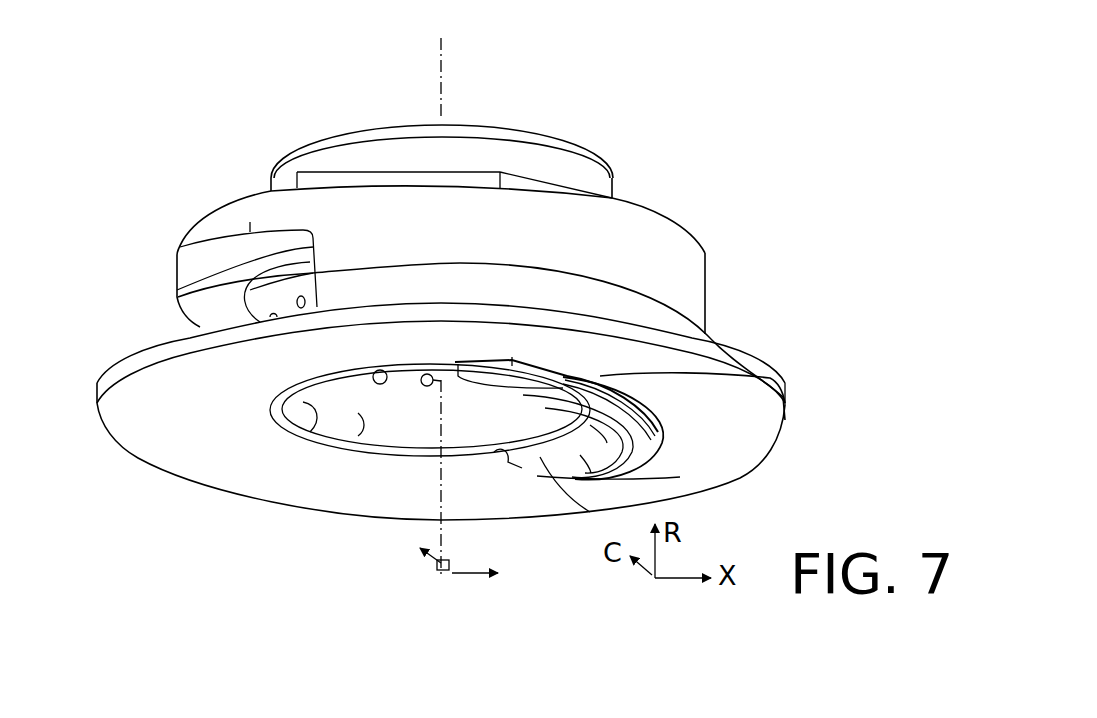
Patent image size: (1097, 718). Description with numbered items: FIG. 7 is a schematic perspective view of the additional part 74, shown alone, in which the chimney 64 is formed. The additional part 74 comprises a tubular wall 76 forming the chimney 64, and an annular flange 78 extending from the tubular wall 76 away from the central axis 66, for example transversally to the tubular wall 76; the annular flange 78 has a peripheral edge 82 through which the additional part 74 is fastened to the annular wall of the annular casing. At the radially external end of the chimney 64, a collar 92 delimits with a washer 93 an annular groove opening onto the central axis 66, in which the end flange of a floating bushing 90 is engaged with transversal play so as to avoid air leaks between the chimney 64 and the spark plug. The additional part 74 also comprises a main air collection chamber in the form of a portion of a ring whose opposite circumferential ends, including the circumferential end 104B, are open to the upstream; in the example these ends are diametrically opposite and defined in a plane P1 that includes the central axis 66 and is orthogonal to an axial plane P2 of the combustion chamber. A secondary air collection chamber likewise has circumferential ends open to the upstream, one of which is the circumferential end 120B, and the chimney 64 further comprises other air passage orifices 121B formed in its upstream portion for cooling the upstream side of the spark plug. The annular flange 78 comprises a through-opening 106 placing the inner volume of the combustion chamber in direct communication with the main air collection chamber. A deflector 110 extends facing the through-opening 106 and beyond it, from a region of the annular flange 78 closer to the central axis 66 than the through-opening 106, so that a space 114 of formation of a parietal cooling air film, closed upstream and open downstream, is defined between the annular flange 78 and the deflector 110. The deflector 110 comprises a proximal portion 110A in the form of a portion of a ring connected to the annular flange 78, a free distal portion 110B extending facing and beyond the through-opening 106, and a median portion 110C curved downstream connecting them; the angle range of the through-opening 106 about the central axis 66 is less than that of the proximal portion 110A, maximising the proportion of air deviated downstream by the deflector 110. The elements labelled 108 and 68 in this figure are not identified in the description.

The central axis 66 is at (444, 80).
The additional part 74 is at (652, 110).
The annular flange 78 is at (133, 420).
The peripheral edge 82 is at (767, 378).
The through-opening 106 is at (786, 405).
The cylindrical wall 108 is at (686, 286).
The bushing 90 is at (558, 136).
The washer 93 is at (400, 172).
The collar 92 is at (250, 222).
The circumferential end 104B is at (182, 243).
The circumferential end 120B is at (240, 262).
The air passage orifices 121B is at (296, 302).
The chimney 64 is at (356, 454).
The tubular wall 76 is at (303, 402).
The central bore 68 is at (358, 413).
The space of formation of parietal cooling air film 114 is at (540, 372).
The deflector 110 is at (739, 455).
The proximal portion 110A is at (603, 498).
The free distal portion 110B is at (640, 441).
The median portion 110C is at (612, 468).
The plane P1 is at (437, 566).
The axial plane P2 is at (456, 568).